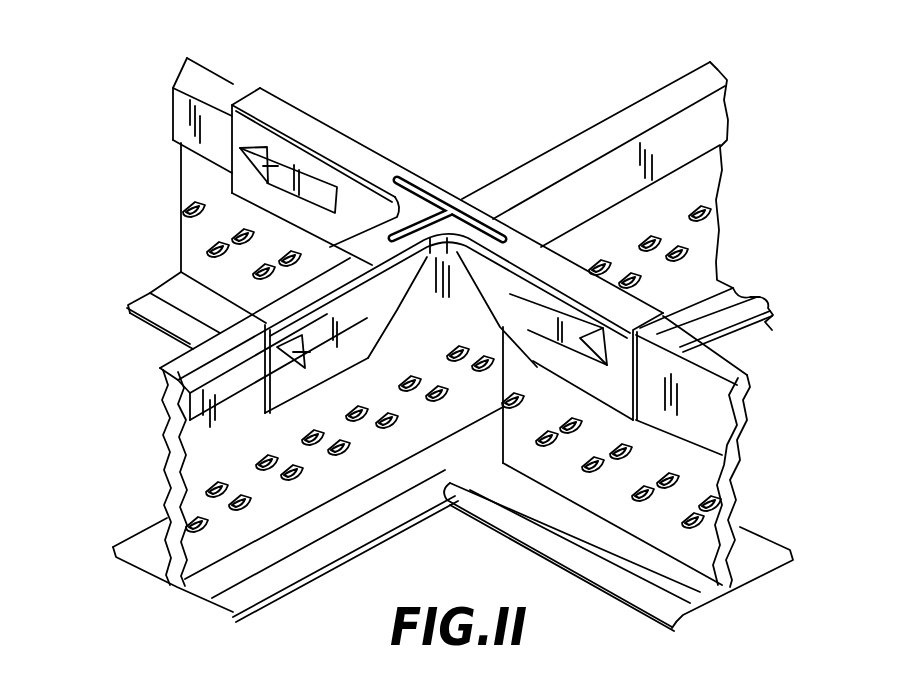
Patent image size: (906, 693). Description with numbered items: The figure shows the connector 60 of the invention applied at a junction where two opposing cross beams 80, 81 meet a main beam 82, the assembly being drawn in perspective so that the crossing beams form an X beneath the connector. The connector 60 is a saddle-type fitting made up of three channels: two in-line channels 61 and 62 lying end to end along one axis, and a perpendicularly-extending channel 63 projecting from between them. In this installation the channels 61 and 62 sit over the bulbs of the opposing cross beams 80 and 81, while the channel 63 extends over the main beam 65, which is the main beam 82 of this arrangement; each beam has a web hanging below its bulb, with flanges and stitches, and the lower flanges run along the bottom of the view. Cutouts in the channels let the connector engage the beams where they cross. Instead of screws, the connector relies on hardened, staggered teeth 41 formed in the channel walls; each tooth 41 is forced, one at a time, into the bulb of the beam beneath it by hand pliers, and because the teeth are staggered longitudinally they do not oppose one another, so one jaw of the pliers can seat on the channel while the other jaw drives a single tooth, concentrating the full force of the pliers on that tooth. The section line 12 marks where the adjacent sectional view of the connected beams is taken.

The section line 12- 12 is at (765, 116).
The teeth 41 is at (255, 156).
The connector 60 is at (369, 243).
The channel 61 is at (323, 128).
The channel 62 is at (571, 277).
The perpendicularly-extending channel 63 is at (258, 305).
The main beam 65 is at (192, 352).
The cross beam 80 is at (718, 365).
The cross beam 81 is at (184, 78).
The main beam 82 is at (715, 268).